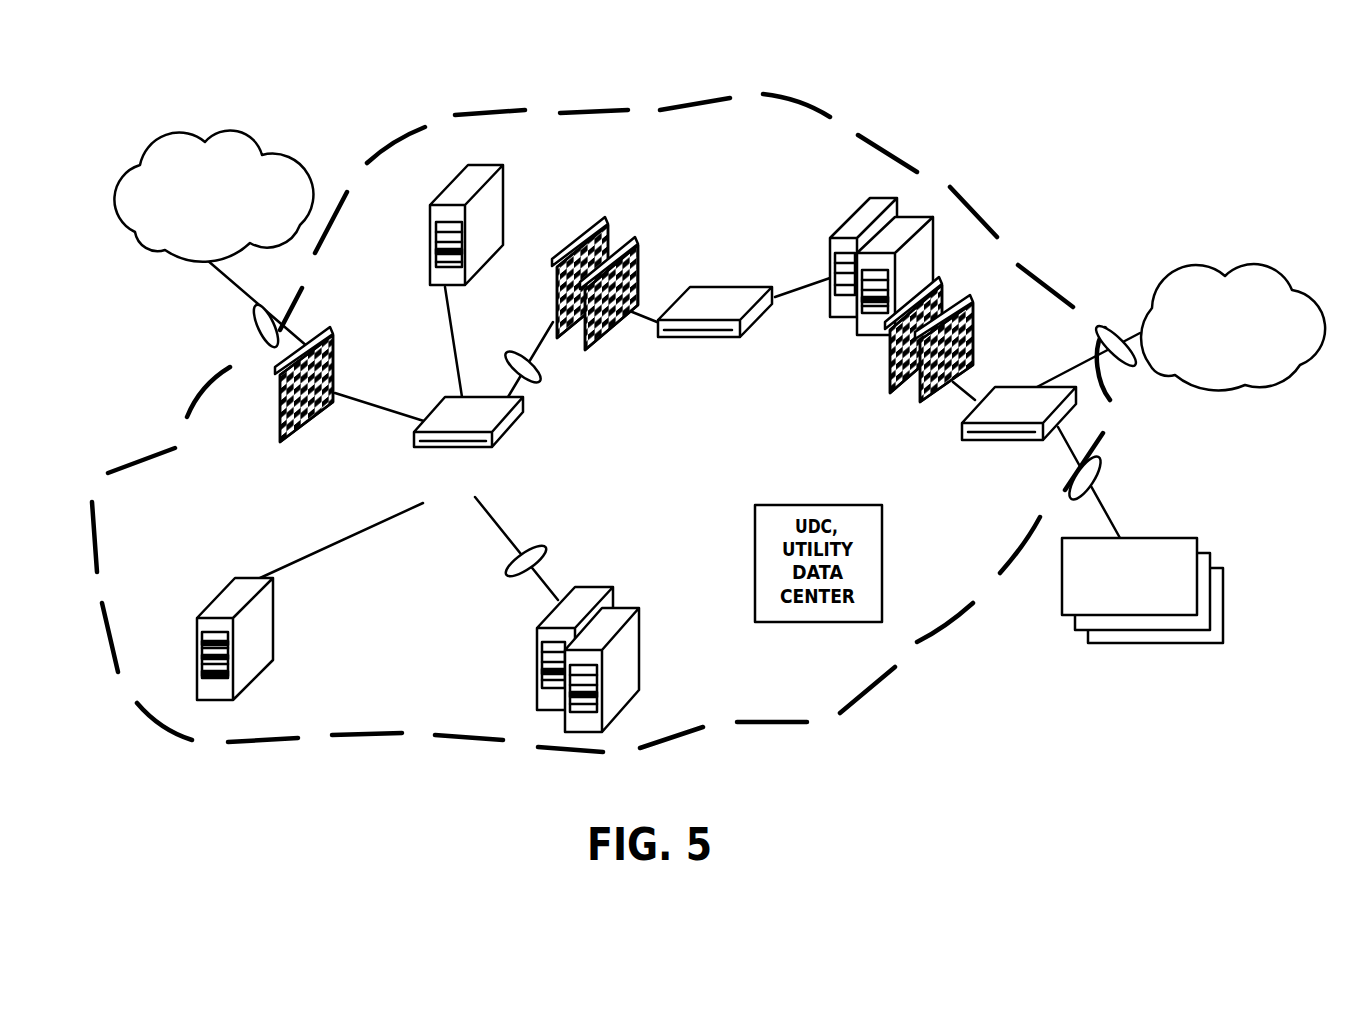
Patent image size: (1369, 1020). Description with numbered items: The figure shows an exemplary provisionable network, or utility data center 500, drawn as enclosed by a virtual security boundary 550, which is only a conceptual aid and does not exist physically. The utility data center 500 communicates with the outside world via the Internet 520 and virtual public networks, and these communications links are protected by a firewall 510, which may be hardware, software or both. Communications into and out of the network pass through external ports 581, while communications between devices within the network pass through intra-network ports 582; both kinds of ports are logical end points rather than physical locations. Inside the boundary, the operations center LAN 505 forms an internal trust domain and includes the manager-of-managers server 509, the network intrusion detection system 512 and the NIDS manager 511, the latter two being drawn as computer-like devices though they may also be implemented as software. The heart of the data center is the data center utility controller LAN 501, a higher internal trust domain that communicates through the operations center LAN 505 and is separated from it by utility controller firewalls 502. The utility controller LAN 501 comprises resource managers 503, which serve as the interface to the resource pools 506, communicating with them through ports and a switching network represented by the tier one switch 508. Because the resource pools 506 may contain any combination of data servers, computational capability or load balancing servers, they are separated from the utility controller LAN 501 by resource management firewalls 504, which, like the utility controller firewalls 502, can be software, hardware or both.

The utility data center 500 is at (661, 71).
The data center utility controller LAN 501 is at (708, 359).
The utility controller firewalls 502 is at (608, 220).
The resource managers 503 is at (903, 210).
The resource management firewalls 504 is at (973, 299).
The operations center LAN 505 is at (468, 472).
The resource pools 506 is at (1253, 315).
The tier 1 switch 508 is at (1008, 460).
The manager-of-managers server 509 is at (488, 225).
The firewall 510 is at (282, 445).
The NIDS manager 511 is at (280, 704).
The network intrusion detection system 512 is at (672, 712).
The Internet 520 is at (228, 194).
The virtual security boundary 550 is at (682, 735).
The external ports 581 is at (1100, 485).
The intra-network ports 582 is at (650, 465).